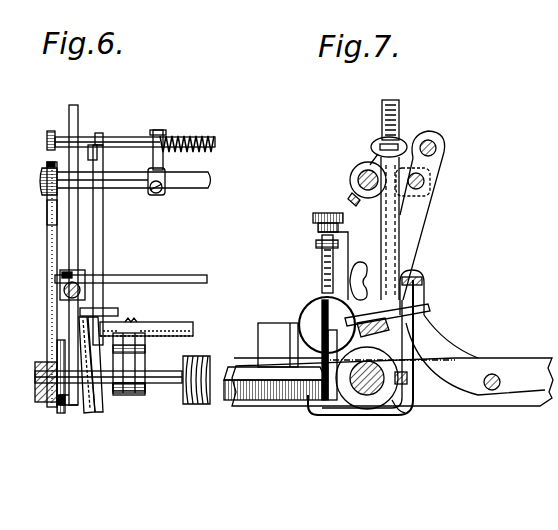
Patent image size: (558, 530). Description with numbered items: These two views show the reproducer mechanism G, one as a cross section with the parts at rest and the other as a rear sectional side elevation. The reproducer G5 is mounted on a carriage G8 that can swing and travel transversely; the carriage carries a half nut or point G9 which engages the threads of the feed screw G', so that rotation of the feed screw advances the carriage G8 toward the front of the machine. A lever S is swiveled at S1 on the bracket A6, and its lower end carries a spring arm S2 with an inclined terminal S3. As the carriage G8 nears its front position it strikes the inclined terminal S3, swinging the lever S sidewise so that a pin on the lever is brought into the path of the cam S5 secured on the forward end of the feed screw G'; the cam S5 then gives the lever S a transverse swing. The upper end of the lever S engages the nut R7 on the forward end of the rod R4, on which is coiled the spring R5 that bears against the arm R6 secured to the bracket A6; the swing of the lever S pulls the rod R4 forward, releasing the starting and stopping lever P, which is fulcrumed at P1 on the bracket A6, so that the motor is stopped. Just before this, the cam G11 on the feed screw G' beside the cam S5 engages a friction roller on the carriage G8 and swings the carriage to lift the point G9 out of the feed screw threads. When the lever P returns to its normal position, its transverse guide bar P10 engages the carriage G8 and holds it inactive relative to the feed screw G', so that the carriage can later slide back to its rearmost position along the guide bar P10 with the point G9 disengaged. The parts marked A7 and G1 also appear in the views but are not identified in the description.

In FIG. 6, the lever S is at (69, 108).
In FIG. 7, the lever S is at (391, 102).
In FIG. 6, the swivel S1 is at (60, 297).
In FIG. 6, the spring arm S2 is at (80, 331).
In FIG. 7, the spring arm S2 is at (333, 292).
In FIG. 6, the inclined terminal S3 is at (113, 310).
In FIG. 6, the cam S5 is at (63, 402).
In FIG. 7, the cam S5 is at (402, 416).
In FIG. 6, the rod R4 is at (134, 140).
In FIG. 7, the rod R4 is at (400, 150).
In FIG. 6, the spring R5 is at (212, 137).
In FIG. 6, the arm R6 is at (157, 133).
In FIG. 7, the arm R6 is at (371, 160).
In FIG. 6, the nut R7 is at (47, 140).
In FIG. 6, the bracket A6 is at (50, 212).
In FIG. 7, the bracket A6 is at (357, 205).
In FIG. 7, the arm pivot A7 is at (427, 181).
In FIG. 6, the reproducer mechanism G is at (94, 324).
In FIG. 7, the reproducer mechanism G is at (321, 266).
In FIG. 6, the feed screw G' is at (143, 363).
In FIG. 6, the gear spring G1 is at (187, 402).
In FIG. 7, the gear spring G1 is at (370, 396).
In FIG. 7, the reproducer G5 is at (266, 328).
In FIG. 6, the carriage G8 is at (105, 223).
In FIG. 7, the carriage G8 is at (420, 229).
In FIG. 7, the half nut or point G9 is at (336, 402).
In FIG. 6, the cam G11 is at (130, 398).
In FIG. 7, the starting and stopping lever P is at (546, 358).
In FIG. 7, the fulcrum P1 is at (492, 390).
In FIG. 6, the guide bar P10 is at (203, 275).
In FIG. 7, the guide bar P10 is at (425, 281).